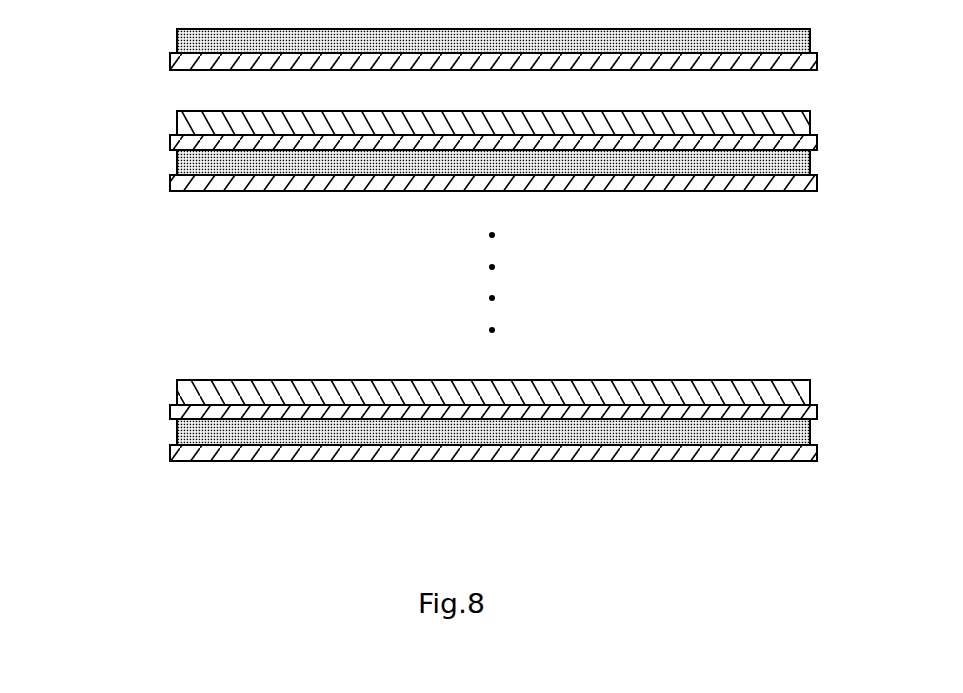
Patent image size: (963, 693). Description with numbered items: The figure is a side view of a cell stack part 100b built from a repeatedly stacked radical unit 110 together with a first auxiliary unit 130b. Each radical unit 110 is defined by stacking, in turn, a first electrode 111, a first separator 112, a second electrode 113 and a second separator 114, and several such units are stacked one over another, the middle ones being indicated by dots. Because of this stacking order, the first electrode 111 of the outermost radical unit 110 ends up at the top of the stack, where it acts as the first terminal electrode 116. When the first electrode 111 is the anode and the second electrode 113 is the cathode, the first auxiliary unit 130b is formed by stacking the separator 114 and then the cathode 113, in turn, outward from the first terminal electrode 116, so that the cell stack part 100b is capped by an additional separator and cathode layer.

The cell stack part 100b is at (826, 33).
The first auxiliary unit 130b is at (85, 31).
The radical unit 110 is at (85, 120).
The first terminal electrode 116 is at (101, 97).
The first electrode 111 is at (190, 124).
The first separator 112 is at (182, 143).
The second electrode 113 is at (190, 41).
The second separator 114 is at (182, 62).